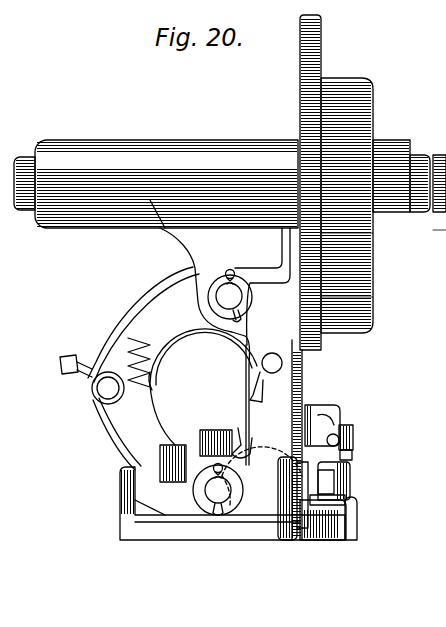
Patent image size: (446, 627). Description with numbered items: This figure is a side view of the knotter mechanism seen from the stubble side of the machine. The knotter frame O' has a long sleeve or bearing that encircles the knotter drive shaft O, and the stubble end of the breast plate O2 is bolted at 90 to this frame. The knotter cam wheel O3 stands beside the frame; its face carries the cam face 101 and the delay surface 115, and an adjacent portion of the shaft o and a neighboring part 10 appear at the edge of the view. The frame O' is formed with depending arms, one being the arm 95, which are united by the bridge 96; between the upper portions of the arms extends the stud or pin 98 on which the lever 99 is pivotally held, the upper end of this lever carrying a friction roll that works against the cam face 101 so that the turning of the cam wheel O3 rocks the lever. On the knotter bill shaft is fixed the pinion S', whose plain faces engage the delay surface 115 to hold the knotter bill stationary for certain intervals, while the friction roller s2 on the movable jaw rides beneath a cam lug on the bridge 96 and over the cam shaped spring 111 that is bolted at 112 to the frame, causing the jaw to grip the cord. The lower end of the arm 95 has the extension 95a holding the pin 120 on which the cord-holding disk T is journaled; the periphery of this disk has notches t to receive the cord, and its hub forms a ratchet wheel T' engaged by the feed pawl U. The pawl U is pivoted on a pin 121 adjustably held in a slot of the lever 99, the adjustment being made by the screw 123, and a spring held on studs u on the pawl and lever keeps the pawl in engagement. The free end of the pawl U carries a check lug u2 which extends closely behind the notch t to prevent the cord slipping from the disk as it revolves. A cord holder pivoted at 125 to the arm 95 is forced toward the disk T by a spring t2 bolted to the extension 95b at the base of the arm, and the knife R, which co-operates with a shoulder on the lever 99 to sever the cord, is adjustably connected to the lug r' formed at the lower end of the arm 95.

The knotter drive shaft O is at (227, 172).
The knotter frame O' is at (166, 173).
The breast plate O2 is at (130, 523).
The knotter cam wheel O3 is at (347, 188).
The shaft o is at (390, 150).
The shaft collar 10 is at (438, 251).
The bolt 90 is at (335, 520).
The arm of knotter frame 95 is at (274, 440).
The extension 95a is at (262, 476).
The extension 95b is at (292, 522).
The bridge 96 is at (310, 430).
The stud or pin 98 is at (228, 292).
The lever 99 is at (150, 300).
The cam face 101 is at (373, 298).
The cam shaped spring 111 is at (345, 452).
The bolt 112 is at (338, 440).
The delay surface 115 is at (308, 113).
The pin 120 is at (214, 492).
The pin 121 is at (104, 390).
The screw 123 is at (62, 363).
The pivot 125 is at (284, 367).
The knife R is at (343, 475).
The lug r' is at (346, 482).
The friction roller s2 is at (350, 456).
The pinion S' is at (238, 381).
The cord-holding disk T is at (133, 463).
The ratchet wheel T' is at (107, 434).
The notch t is at (240, 445).
The spring t2 is at (345, 498).
The ring lug u is at (158, 379).
The feed pawl U is at (203, 387).
The check lug or extension u2 is at (212, 427).